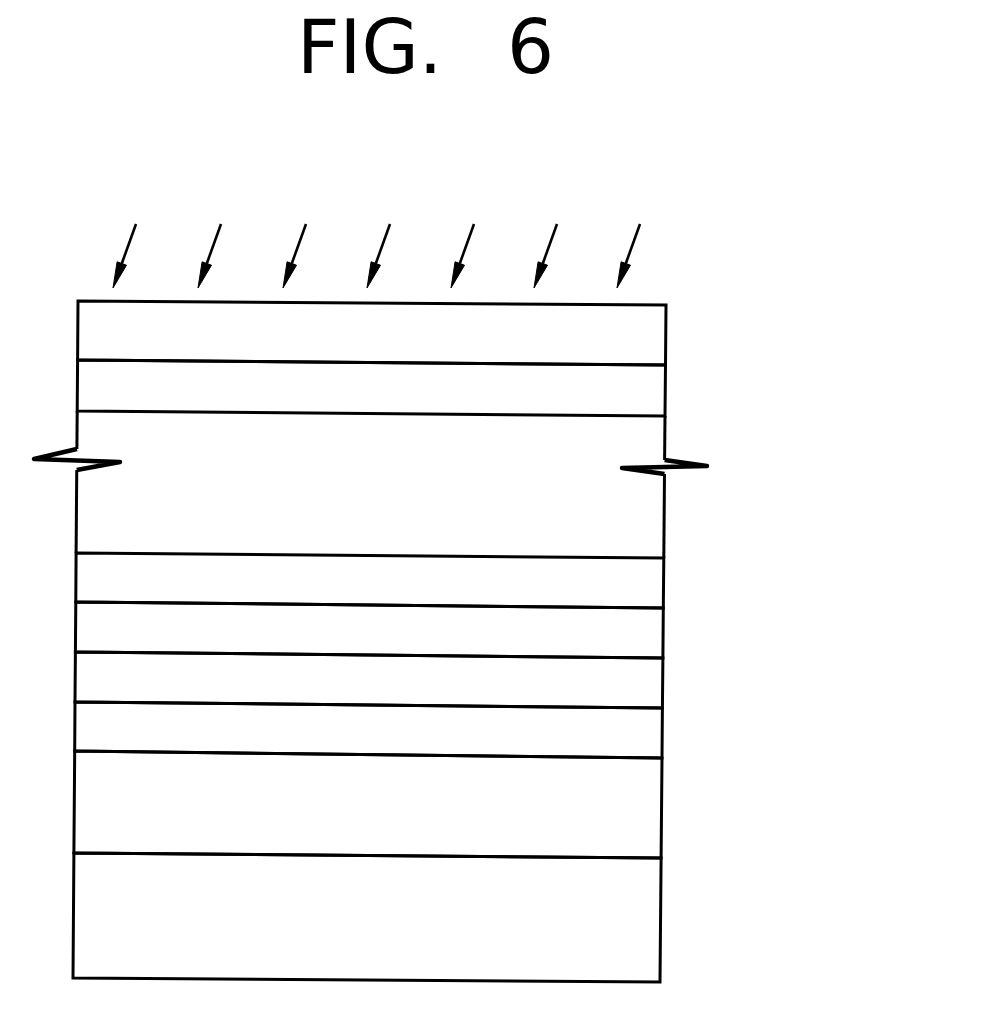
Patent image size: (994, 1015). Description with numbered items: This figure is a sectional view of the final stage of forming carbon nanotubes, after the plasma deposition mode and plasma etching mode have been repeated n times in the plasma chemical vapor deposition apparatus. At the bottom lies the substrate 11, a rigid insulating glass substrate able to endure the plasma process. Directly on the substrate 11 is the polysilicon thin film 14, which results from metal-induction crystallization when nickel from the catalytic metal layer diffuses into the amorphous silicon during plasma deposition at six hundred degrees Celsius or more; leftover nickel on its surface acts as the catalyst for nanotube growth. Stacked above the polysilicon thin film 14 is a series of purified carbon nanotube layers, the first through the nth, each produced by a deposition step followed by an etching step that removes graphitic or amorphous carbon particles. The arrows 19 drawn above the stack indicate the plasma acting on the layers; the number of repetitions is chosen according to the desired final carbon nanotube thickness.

The substrate 11 is at (655, 909).
The polysilicon thin film 14 is at (655, 793).
The irradiation (ion beam / light) arrows 19 is at (631, 248).